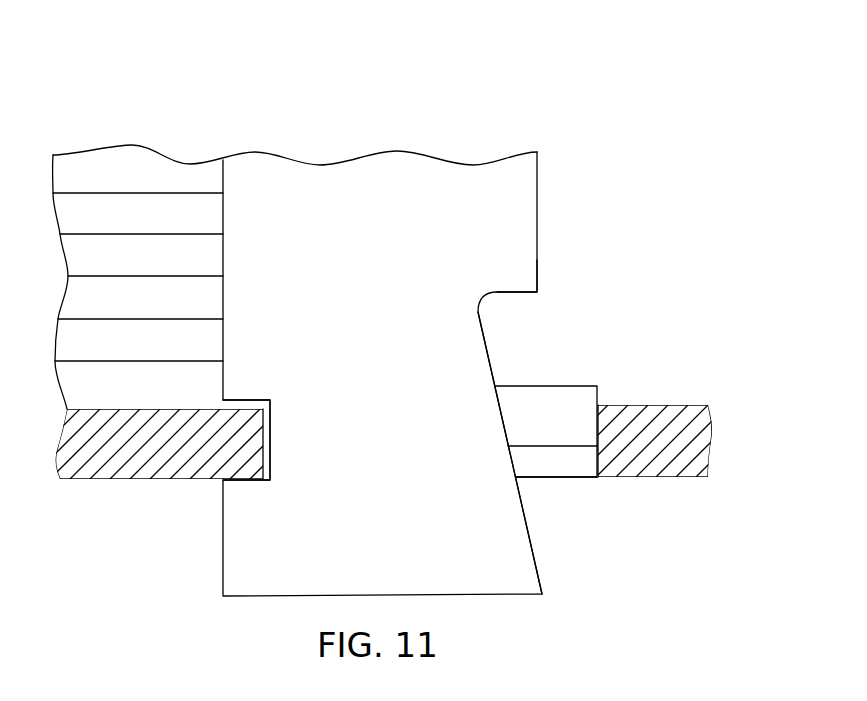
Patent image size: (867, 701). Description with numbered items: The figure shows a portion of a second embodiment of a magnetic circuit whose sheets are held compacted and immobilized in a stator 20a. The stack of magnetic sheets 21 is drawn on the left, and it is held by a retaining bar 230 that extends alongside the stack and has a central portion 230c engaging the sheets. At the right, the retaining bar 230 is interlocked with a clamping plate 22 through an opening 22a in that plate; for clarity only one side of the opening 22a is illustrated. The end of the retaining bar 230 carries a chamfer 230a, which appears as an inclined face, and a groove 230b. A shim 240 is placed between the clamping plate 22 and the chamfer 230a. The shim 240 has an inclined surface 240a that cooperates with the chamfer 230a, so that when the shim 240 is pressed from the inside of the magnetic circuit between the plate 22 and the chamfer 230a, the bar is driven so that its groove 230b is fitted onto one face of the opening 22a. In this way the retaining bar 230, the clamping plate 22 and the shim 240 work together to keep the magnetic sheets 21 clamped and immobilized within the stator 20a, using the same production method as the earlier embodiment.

The stator 20a is at (607, 82).
The magnetic sheet 21 is at (132, 145).
The clamping plate 22 is at (712, 440).
The opening 22a is at (558, 478).
The retaining bar 230 is at (537, 207).
The chamfer 230a is at (485, 340).
The groove 230b is at (270, 438).
The central portion 230c is at (537, 275).
The shim 240 is at (580, 395).
The inclined surface 240a is at (500, 410).